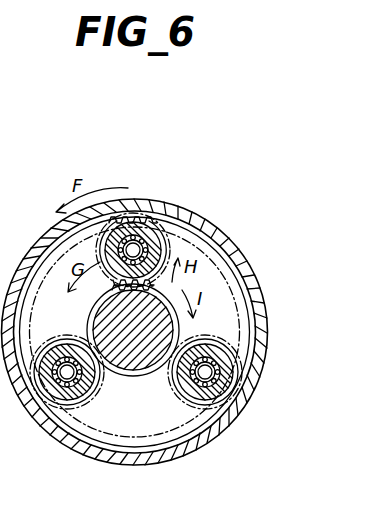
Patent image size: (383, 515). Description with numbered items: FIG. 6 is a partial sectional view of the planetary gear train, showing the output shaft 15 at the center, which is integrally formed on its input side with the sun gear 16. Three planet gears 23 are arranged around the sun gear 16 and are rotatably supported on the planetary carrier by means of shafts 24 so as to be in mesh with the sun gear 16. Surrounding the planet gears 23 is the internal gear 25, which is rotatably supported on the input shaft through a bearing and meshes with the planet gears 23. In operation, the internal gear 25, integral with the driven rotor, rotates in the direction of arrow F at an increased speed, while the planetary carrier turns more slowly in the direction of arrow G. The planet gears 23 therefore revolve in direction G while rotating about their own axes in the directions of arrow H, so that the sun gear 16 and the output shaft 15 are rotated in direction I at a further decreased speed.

The output shaft 15 is at (136, 368).
The sun gear 16 is at (152, 287).
The planet gears 23 is at (167, 245).
The shafts 24 is at (205, 372).
The internal gear 25 is at (155, 206).